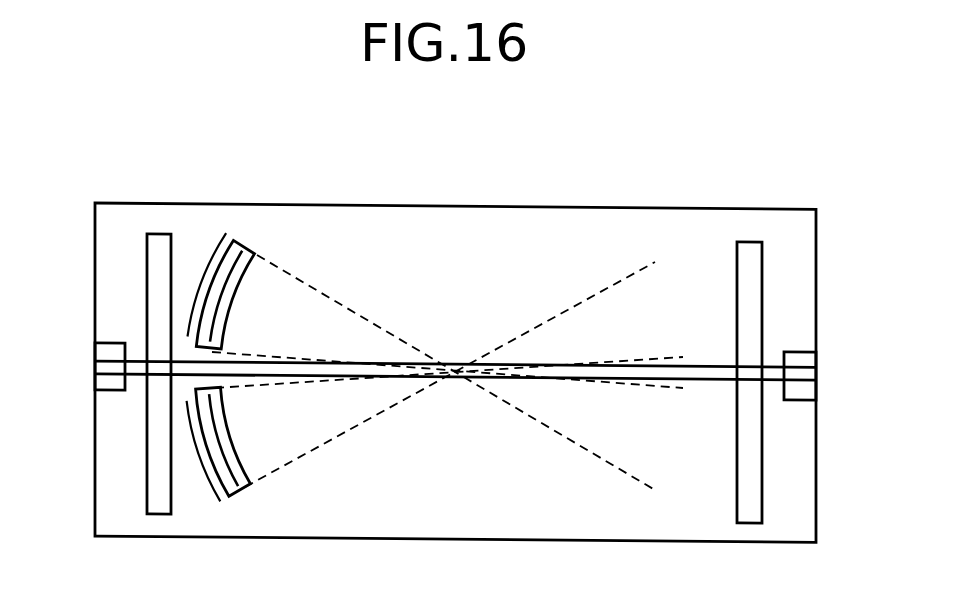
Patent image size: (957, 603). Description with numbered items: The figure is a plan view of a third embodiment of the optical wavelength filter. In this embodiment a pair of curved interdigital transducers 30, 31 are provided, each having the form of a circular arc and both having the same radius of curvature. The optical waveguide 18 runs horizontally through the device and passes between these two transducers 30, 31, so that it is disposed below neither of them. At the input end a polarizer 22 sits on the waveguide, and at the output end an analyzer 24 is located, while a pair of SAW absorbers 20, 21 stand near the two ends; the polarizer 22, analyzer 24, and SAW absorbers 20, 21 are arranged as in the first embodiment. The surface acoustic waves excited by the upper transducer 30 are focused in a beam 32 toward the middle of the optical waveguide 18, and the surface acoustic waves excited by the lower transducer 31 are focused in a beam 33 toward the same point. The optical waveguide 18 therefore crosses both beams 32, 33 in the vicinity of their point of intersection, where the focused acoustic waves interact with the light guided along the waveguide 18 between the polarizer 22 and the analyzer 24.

The optical waveguide 18 is at (704, 375).
The SAW absorber 20 is at (160, 238).
The SAW absorber 21 is at (747, 440).
The polarizer 22 is at (105, 382).
The analyzer 24 is at (805, 360).
The curved interdigital transducer 30 is at (245, 245).
The curved interdigital transducer 31 is at (226, 498).
The beam 32 is at (340, 303).
The beam 33 is at (382, 411).